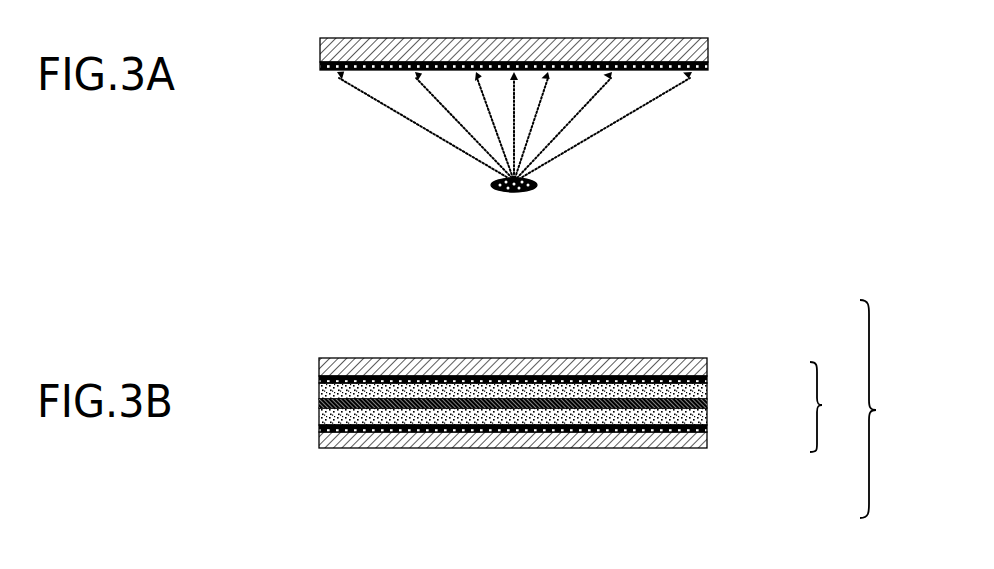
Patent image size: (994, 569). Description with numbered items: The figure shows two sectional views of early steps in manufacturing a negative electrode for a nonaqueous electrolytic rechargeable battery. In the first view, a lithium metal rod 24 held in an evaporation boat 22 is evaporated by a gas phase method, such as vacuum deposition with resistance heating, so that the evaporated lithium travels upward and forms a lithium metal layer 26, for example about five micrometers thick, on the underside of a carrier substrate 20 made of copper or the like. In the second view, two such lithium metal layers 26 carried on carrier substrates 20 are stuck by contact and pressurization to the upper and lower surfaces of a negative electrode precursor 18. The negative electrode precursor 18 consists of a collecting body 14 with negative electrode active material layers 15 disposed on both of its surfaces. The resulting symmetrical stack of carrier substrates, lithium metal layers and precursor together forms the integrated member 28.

In FIG. 3A, the carrier substrate 20 is at (698, 42).
In FIG. 3B, the carrier substrate 20 is at (708, 357).
In FIG. 3A, the lithium metal layer 26 is at (708, 66).
In FIG. 3B, the lithium metal layer 26 is at (708, 373).
In FIG. 3A, the evaporation boat 22 is at (536, 181).
In FIG. 3A, the lithium metal rod 24 is at (490, 182).
In FIG. 3B, the negative electrode active material layer 15 is at (708, 383).
In FIG. 3B, the collecting body 14 is at (708, 402).
In FIG. 3B, the negative electrode precursor 18 is at (833, 407).
In FIG. 3B, the integrated member 28 is at (888, 409).